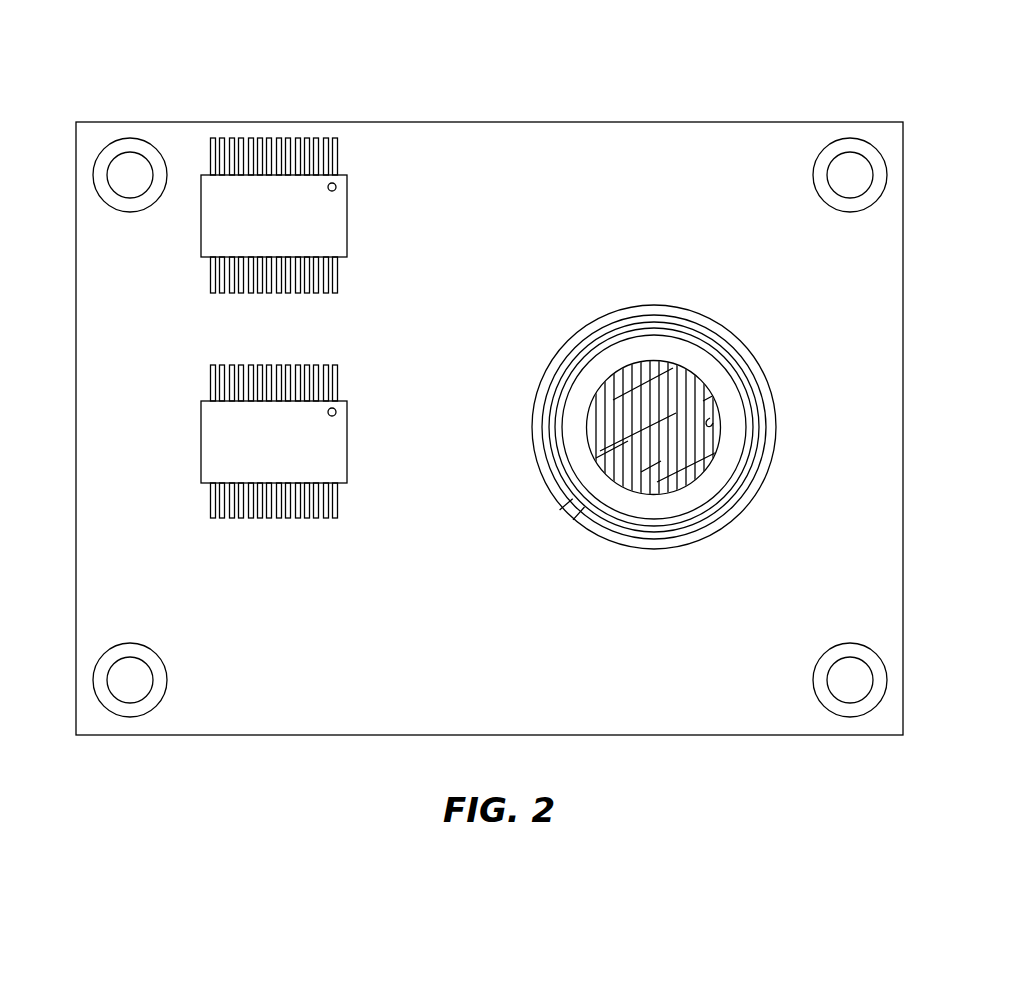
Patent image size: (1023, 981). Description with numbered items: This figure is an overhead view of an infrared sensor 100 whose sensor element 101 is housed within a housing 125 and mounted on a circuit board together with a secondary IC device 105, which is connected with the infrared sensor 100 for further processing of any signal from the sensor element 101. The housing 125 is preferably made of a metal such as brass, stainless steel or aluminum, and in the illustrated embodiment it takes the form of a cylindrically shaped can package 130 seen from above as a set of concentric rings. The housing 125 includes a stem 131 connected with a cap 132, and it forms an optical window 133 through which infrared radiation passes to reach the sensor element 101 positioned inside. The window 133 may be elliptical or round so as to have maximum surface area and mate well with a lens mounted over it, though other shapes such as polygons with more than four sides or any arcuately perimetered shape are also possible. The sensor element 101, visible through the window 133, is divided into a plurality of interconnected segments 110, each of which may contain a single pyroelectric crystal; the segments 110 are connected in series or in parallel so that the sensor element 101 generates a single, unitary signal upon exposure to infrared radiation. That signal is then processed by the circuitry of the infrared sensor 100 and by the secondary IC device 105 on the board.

The infrared sensor 100 is at (676, 84).
The secondary IC device 105 is at (878, 283).
The segment 110 is at (643, 361).
The sensor element 101 is at (683, 392).
The optical window 133 is at (710, 418).
The cap 132 is at (573, 423).
The housing 125 is at (560, 491).
The can package 130 is at (746, 500).
The stem 131 is at (660, 530).